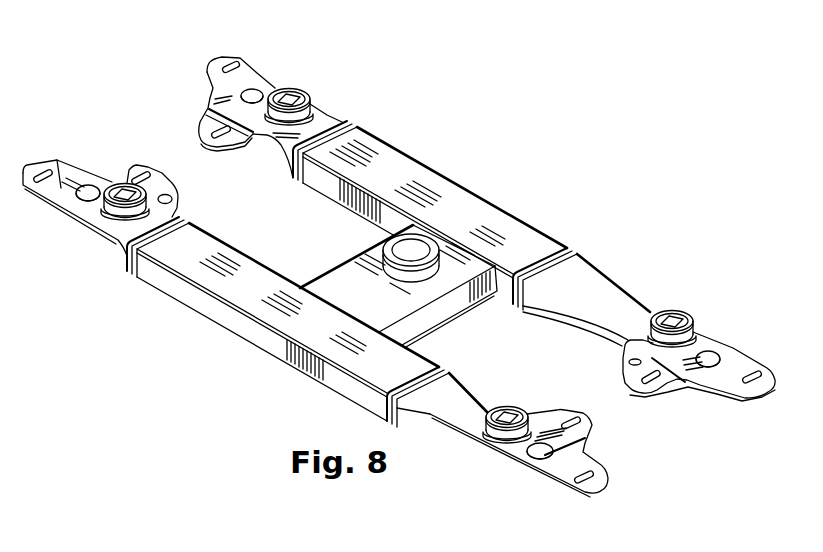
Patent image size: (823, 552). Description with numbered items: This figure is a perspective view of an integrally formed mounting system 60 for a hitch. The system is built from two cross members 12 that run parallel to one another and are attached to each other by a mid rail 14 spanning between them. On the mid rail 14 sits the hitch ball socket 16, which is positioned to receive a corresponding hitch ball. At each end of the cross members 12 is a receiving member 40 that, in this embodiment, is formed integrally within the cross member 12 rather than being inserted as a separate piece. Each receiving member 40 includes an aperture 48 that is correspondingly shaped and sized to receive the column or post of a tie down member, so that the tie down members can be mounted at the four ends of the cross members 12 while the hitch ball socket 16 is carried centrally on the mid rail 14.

The cross members 12 is at (377, 167).
The mid rail 14 is at (443, 292).
The hitch ball socket 16 is at (405, 250).
The receiving member 40 is at (313, 113).
The aperture 48 is at (293, 98).
The integrally formed mounting system 60 is at (543, 148).